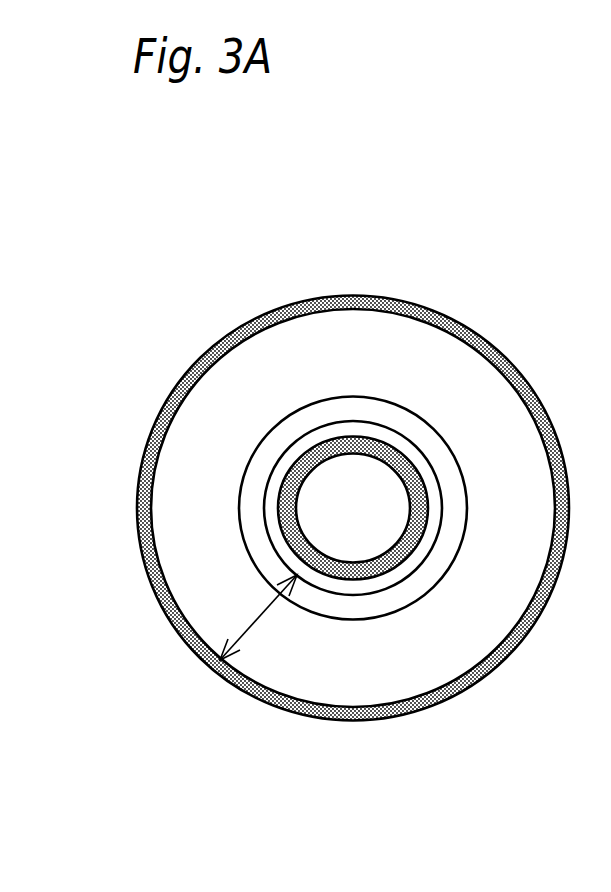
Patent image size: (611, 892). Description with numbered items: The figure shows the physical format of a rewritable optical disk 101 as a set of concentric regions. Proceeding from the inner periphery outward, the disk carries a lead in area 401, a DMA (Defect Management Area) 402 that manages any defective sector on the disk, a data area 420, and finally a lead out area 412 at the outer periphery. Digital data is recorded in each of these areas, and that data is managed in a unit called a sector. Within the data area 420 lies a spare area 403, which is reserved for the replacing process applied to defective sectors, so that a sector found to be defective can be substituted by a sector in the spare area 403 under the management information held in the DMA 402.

The rewritable optical disk 101 is at (534, 780).
The lead in area 401 is at (311, 449).
The DMA (Defect Management Area) 402 is at (343, 430).
The spare area 403 is at (385, 413).
The lead out area 412 is at (495, 357).
The data area 420 is at (252, 623).